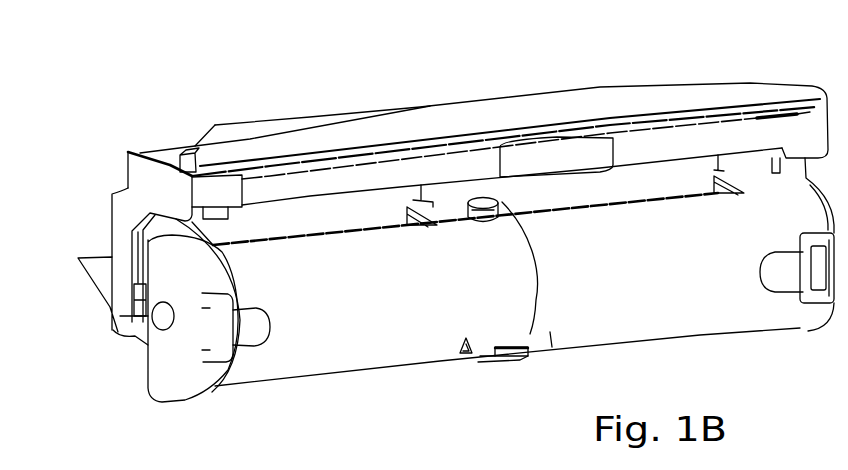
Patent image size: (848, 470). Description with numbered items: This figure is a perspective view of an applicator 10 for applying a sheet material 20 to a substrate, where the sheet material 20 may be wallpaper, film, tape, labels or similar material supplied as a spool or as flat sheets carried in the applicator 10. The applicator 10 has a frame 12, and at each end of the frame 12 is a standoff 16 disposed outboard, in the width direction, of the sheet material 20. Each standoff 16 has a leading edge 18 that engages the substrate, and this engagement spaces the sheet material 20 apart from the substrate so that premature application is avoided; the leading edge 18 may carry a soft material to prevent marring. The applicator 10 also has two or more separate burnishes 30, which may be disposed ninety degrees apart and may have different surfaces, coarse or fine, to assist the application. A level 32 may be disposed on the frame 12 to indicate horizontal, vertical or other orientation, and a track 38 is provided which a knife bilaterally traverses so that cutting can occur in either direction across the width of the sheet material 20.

The applicator 10 is at (702, 361).
The frame 12 is at (253, 178).
The standoffs 16 is at (117, 300).
The leading edge 18 is at (110, 217).
The sheet material 20 is at (97, 277).
The burnishes 30 is at (381, 128).
The level 32 is at (513, 357).
The track 38 is at (646, 130).